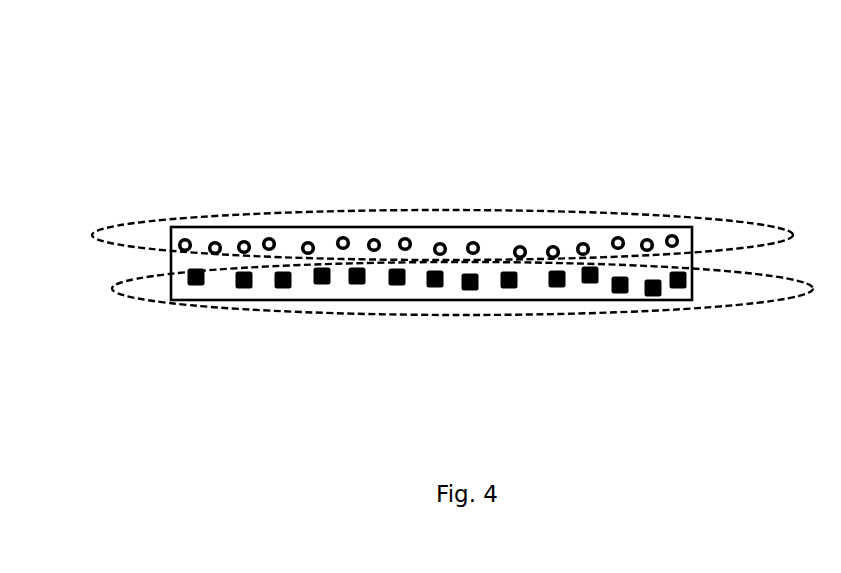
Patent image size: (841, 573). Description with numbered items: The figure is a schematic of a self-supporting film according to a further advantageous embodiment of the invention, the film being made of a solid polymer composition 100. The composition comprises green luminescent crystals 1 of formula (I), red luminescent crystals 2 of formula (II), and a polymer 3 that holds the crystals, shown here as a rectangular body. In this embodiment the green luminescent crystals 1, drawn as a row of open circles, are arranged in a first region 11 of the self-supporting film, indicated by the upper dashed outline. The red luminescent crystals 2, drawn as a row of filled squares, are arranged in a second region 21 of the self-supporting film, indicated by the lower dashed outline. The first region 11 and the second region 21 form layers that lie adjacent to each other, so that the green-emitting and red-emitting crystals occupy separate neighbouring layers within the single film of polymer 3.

The solid polymer composition 100 is at (318, 102).
The green luminescent crystals 1 is at (288, 238).
The polymer 3 is at (492, 250).
The red luminescent crystals 2 is at (398, 288).
The first region 11 is at (145, 213).
The second region 21 is at (155, 307).